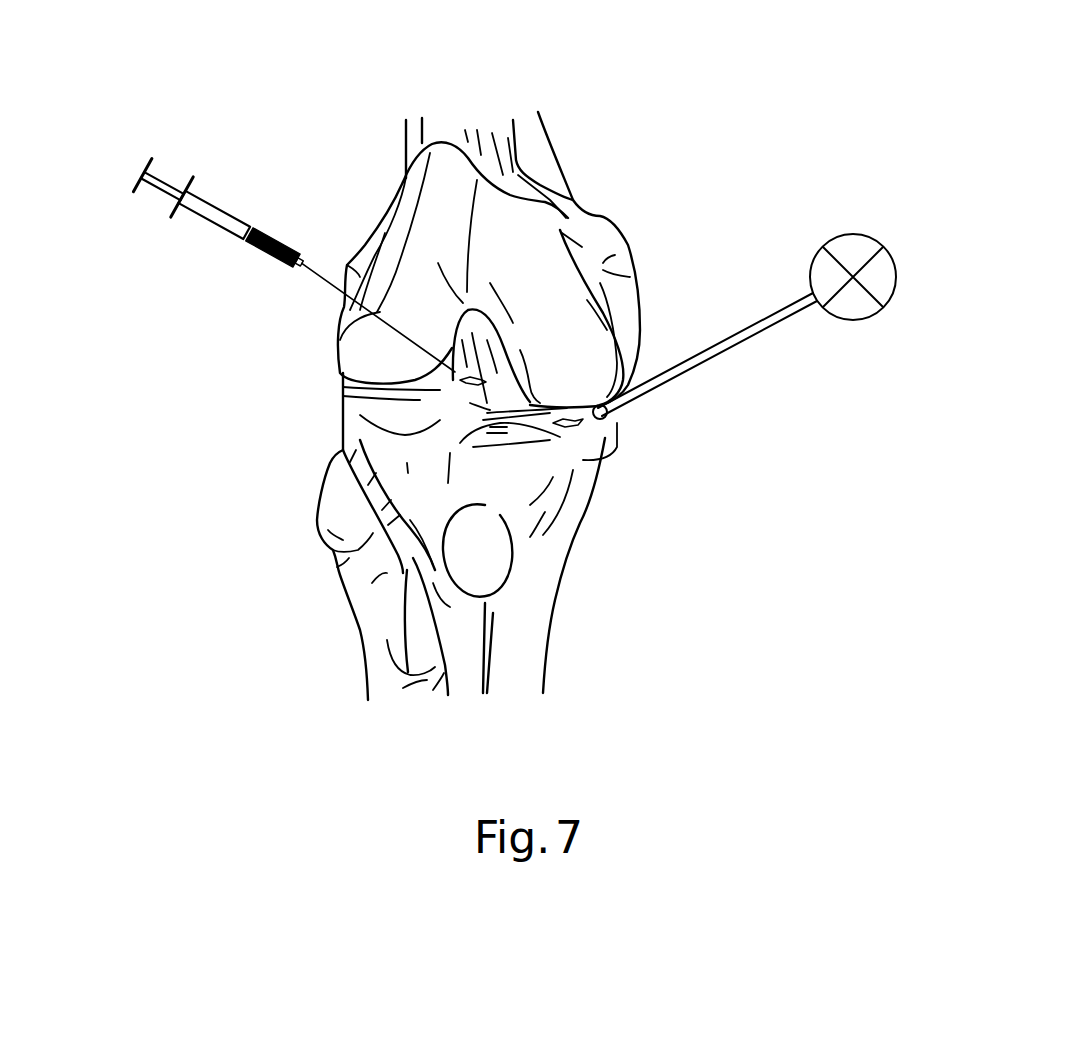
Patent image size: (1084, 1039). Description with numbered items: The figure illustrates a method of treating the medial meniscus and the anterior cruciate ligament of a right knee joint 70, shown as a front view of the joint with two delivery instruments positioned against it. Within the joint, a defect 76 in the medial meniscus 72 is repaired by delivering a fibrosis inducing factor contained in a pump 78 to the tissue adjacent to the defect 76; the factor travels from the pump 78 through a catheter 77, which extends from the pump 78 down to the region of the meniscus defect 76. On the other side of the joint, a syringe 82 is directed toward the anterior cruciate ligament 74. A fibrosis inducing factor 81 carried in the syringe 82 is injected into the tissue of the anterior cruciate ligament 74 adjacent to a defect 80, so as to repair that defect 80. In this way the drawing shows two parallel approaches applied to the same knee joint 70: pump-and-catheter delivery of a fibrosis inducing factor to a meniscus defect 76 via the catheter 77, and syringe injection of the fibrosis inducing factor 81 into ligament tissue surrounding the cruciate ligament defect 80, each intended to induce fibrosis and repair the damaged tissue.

The right knee joint 70 is at (348, 156).
The medial meniscus 72 is at (570, 450).
The anterior cruciate ligament 74 is at (447, 413).
The defect 76 is at (596, 438).
The catheter 77 is at (780, 343).
The pump 78 is at (829, 220).
The defect 80 is at (447, 389).
The fibrosis inducing factor 81 is at (284, 218).
The syringe 82 is at (271, 240).